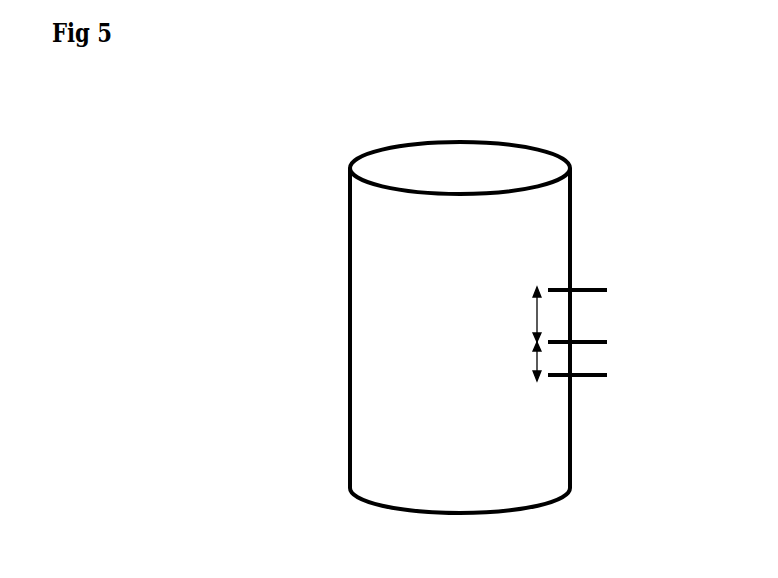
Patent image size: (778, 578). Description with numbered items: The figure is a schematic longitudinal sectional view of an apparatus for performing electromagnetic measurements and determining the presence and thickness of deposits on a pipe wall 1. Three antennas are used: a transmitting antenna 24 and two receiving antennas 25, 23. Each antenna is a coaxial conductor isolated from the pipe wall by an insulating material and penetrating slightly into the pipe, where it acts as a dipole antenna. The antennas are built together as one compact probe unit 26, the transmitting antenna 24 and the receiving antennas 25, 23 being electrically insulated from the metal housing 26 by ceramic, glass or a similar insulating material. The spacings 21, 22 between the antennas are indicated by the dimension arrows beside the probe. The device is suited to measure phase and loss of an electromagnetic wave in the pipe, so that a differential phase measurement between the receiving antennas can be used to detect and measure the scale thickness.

The cylindrical vessel body 1 is at (350, 312).
The first spacing distance 21 is at (533, 303).
The second spacing distance 22 is at (540, 365).
The receiving antenna 23 is at (604, 378).
The transmitting antenna 24 is at (607, 342).
The receiving antenna 25 is at (607, 288).
The compact probe unit 26 is at (551, 290).